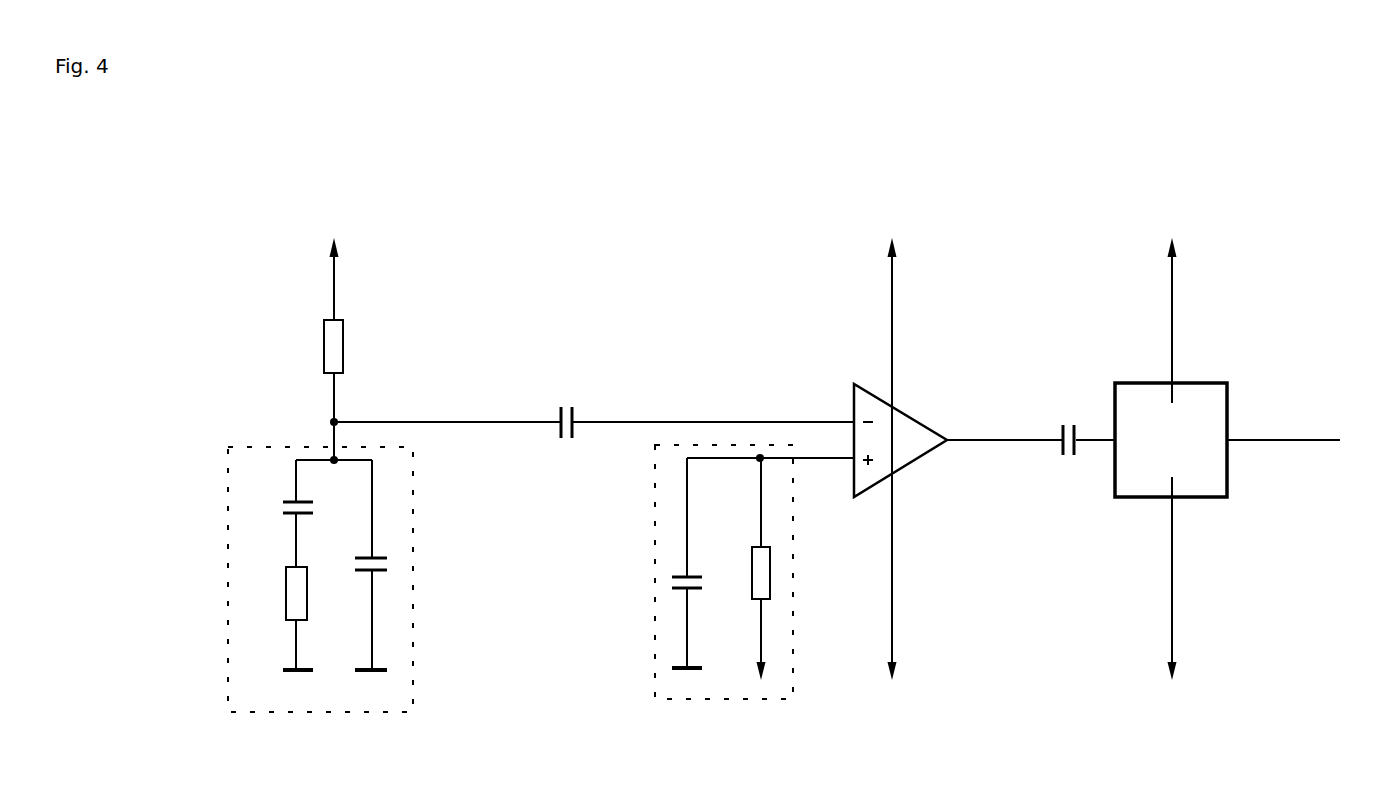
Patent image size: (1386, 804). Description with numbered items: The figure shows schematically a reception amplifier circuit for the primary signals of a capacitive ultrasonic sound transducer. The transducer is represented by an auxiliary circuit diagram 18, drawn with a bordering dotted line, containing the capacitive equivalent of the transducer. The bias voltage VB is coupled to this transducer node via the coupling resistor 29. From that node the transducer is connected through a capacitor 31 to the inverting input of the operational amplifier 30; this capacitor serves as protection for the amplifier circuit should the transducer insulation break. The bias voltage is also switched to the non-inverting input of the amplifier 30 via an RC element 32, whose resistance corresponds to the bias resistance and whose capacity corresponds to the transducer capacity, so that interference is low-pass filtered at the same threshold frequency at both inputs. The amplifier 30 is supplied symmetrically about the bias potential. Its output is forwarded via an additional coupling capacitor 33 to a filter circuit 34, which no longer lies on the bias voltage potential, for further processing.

The sensor equivalent circuit 18 is at (395, 695).
The coupling resistor 29 is at (335, 333).
The amplifier 30 is at (910, 453).
The capacitor 31 is at (572, 405).
The RC element 32 is at (780, 693).
The coupling capacitor 33 is at (1067, 422).
The filter circuit 34 is at (1208, 458).